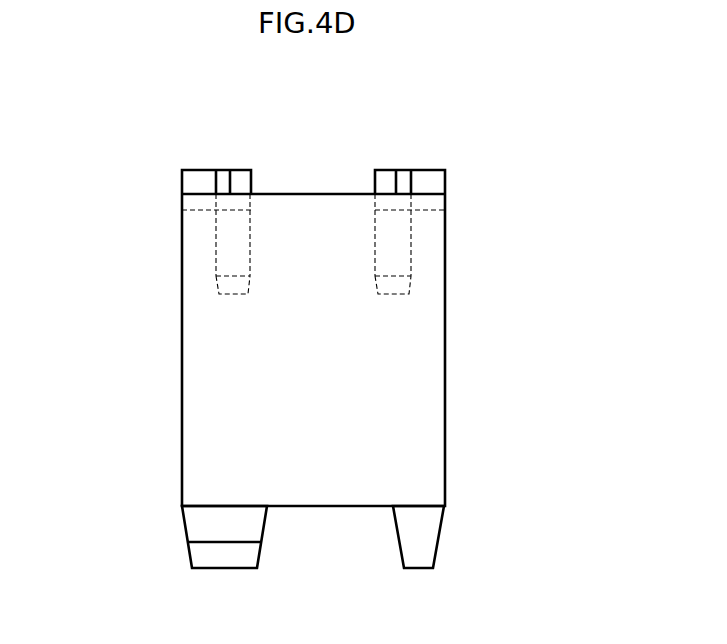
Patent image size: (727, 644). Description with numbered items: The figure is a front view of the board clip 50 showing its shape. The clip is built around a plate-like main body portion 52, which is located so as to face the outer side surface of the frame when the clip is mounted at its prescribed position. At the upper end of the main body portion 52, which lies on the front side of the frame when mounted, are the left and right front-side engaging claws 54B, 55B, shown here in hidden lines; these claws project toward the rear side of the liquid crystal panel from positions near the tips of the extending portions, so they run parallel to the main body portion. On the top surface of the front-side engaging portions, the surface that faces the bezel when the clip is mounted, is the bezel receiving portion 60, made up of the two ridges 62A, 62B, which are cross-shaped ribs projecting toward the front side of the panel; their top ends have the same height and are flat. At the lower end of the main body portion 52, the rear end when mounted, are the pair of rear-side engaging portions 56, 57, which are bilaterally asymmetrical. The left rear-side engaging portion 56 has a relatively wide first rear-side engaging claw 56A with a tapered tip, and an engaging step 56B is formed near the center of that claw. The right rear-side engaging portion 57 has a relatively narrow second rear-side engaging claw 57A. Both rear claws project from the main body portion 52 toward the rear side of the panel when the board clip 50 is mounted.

The board clip 50 is at (134, 220).
The main body portion 52 is at (445, 368).
The front-side engaging claw 54B is at (216, 268).
The front-side engaging claw 55B is at (411, 263).
The rear-side engaging portion 56 is at (188, 559).
The first rear-side engaging claw 56A is at (200, 530).
The engaging step 56B is at (240, 535).
The rear-side engaging portion 57 is at (443, 560).
The second rear-side engaging claw 57A is at (432, 530).
The bezel receiving portion 60 is at (361, 154).
The ridge 62A is at (200, 170).
The ridge 62B is at (428, 170).